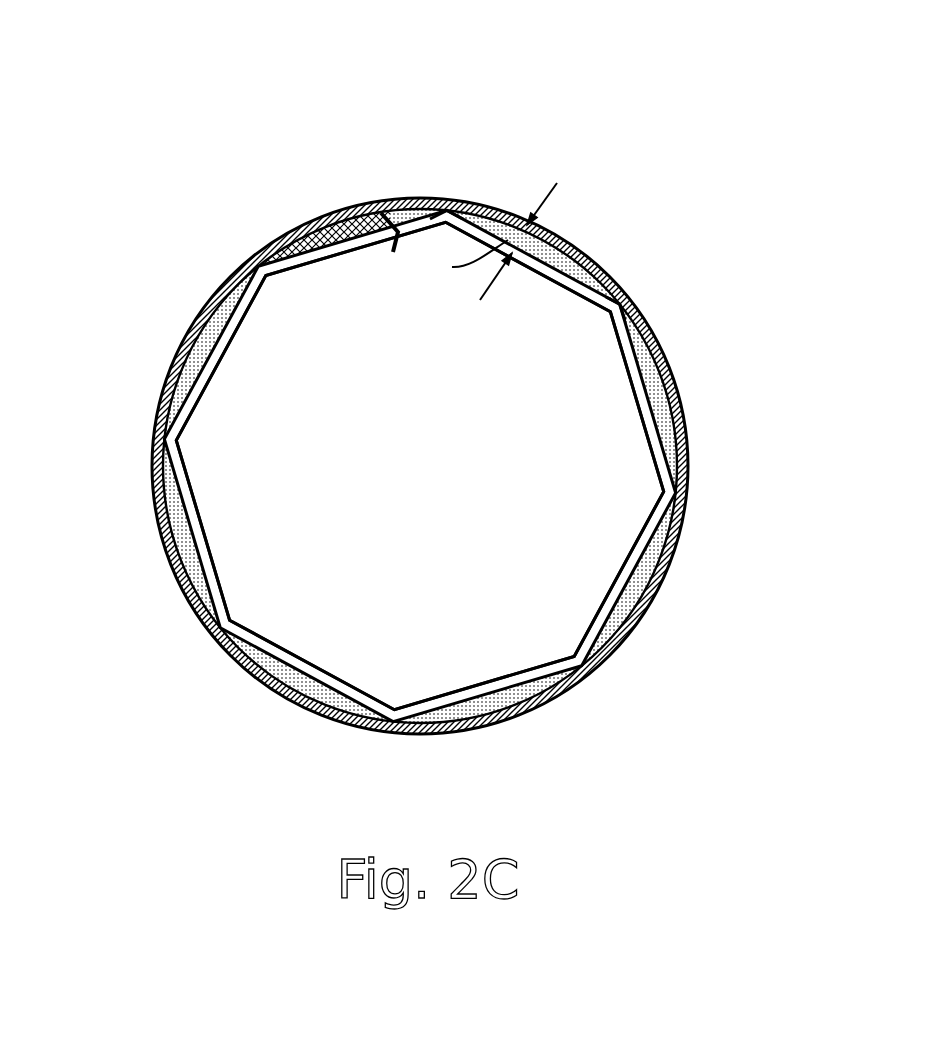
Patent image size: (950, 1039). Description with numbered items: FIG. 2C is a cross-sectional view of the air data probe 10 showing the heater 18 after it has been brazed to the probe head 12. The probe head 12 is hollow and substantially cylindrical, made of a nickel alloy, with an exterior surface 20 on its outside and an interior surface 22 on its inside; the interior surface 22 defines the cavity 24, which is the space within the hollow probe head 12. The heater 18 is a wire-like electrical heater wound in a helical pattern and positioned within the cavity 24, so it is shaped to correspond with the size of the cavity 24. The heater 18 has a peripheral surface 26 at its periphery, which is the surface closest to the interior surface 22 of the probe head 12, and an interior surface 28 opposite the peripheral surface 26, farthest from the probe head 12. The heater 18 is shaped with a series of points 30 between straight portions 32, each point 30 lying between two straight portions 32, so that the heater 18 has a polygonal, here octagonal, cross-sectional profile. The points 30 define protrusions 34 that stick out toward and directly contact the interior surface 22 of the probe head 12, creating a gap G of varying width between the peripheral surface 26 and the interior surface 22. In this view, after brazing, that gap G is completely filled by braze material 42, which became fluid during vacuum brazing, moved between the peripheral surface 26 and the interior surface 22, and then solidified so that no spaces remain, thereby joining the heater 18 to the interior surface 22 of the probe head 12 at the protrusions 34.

The air data probe 10 is at (131, 108).
The probe head 12 is at (673, 535).
The heater 18 is at (640, 373).
The exterior surface 20 is at (683, 503).
The interior surface 22 is at (653, 578).
The cavity 24 is at (310, 413).
The peripheral surface 26 is at (655, 418).
The interior surface 28 is at (647, 445).
The points 30 is at (437, 205).
The straight portions 32 is at (350, 252).
The protrusions 34 is at (452, 206).
The braze material 42 is at (212, 333).